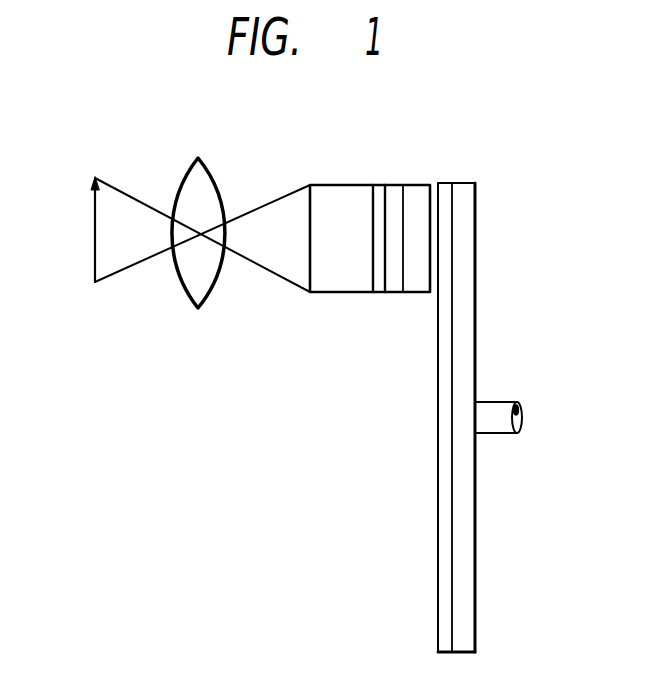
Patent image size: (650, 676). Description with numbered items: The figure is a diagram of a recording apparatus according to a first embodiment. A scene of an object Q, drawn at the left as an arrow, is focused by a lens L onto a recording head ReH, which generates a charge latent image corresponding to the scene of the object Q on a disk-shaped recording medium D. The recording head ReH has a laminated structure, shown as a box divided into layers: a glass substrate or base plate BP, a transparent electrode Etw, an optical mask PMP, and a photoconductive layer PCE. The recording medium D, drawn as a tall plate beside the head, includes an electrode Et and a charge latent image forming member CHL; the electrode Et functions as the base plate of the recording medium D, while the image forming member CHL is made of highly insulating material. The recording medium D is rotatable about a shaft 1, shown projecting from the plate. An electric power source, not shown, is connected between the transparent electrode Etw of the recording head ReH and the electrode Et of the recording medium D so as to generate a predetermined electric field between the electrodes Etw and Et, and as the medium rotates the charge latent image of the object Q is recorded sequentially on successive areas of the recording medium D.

The object Q is at (93, 203).
The lens L is at (205, 188).
The base plate BP is at (333, 198).
The transparent electrode Etw is at (378, 188).
The optical mask PMP is at (397, 190).
The photoconductive layer PCE is at (418, 192).
The recording head ReH is at (347, 236).
The recording medium D is at (494, 417).
The electrode Et is at (462, 298).
The charge latent image forming member CHL is at (448, 358).
The shaft 1 is at (498, 425).